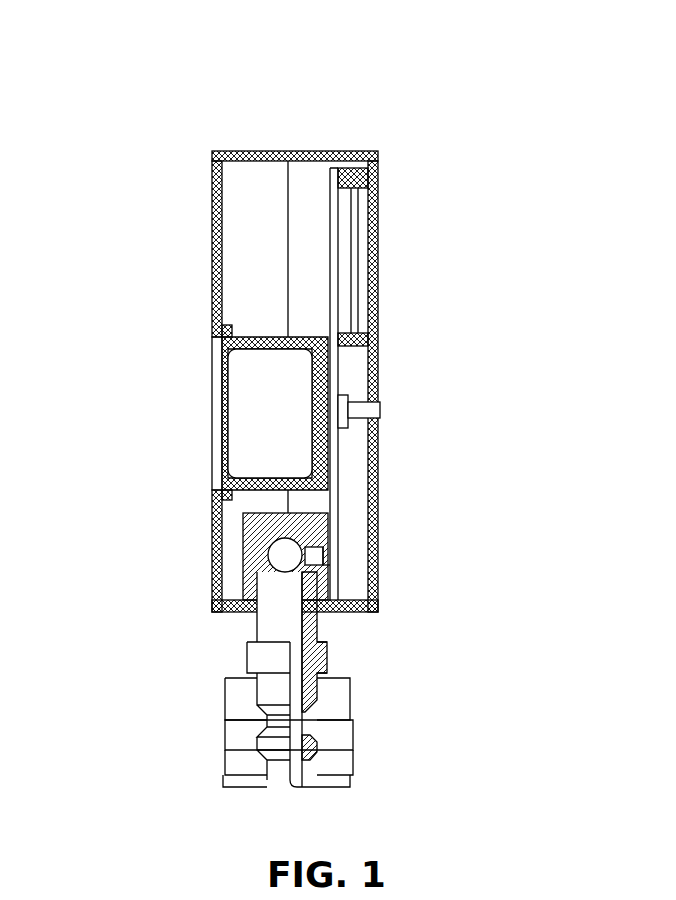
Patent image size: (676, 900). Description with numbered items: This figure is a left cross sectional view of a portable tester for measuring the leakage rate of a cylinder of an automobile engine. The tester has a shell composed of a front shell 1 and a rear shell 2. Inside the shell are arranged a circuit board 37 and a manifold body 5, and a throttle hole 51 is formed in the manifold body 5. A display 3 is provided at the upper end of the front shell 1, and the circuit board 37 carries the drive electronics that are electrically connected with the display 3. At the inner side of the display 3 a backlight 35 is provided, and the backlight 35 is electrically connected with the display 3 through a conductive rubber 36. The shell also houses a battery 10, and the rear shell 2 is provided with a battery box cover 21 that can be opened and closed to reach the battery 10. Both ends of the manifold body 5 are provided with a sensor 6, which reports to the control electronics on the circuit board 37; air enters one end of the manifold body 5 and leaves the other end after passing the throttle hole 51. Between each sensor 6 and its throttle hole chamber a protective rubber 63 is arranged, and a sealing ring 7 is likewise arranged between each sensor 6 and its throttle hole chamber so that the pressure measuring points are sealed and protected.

The front shell 1 is at (360, 148).
The rear shell 2 is at (240, 148).
The battery box cover 21 is at (218, 390).
The battery 10 is at (256, 445).
The display 3 is at (360, 297).
The backlight 35 is at (350, 227).
The conductive rubber 36 is at (347, 179).
The circuit board 37 is at (340, 371).
The manifold body 5 is at (294, 525).
The throttle hole 51 is at (282, 559).
The protective rubber 63 is at (326, 551).
The sensor 6 is at (326, 561).
The sealing ring 7 is at (326, 571).